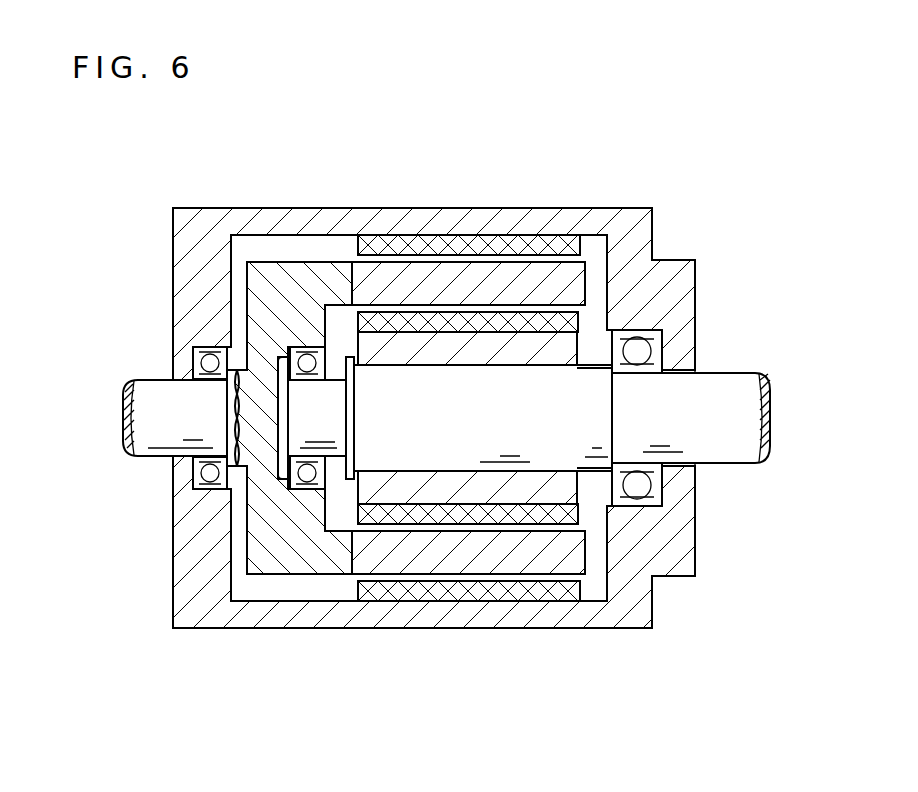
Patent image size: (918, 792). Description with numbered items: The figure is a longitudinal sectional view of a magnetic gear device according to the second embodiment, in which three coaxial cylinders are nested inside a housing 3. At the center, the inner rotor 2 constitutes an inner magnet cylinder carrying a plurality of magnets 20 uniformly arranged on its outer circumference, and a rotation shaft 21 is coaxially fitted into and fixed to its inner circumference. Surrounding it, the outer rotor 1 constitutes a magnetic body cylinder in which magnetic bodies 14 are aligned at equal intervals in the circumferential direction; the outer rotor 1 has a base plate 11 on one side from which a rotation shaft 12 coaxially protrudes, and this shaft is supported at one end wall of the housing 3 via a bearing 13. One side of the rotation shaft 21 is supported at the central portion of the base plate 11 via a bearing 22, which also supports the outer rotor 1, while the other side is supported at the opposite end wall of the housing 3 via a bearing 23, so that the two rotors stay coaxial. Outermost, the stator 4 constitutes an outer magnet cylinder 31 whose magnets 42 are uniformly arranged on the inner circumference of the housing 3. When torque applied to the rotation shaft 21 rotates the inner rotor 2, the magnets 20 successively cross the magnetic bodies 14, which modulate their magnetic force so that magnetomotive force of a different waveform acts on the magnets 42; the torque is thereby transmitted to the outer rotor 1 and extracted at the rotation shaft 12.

The outer rotor 1 is at (321, 365).
The base plate 11 is at (252, 583).
The magnetic bodies 14 is at (428, 270).
The inner rotor 2 is at (583, 343).
The magnets 20 is at (510, 312).
The rotation shaft 21 is at (745, 372).
The bearing 22 is at (307, 352).
The bearing 23 is at (645, 332).
The housing 3 is at (432, 463).
The outer magnet cylinder 31 is at (517, 620).
The stator 4 is at (468, 468).
The magnets 42 is at (383, 600).
The rotation shaft 12 is at (148, 385).
The bearing 13 is at (207, 348).